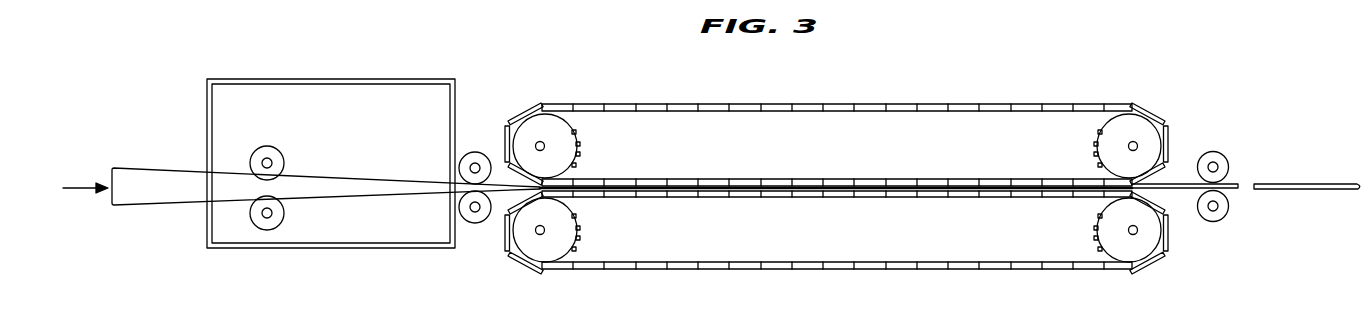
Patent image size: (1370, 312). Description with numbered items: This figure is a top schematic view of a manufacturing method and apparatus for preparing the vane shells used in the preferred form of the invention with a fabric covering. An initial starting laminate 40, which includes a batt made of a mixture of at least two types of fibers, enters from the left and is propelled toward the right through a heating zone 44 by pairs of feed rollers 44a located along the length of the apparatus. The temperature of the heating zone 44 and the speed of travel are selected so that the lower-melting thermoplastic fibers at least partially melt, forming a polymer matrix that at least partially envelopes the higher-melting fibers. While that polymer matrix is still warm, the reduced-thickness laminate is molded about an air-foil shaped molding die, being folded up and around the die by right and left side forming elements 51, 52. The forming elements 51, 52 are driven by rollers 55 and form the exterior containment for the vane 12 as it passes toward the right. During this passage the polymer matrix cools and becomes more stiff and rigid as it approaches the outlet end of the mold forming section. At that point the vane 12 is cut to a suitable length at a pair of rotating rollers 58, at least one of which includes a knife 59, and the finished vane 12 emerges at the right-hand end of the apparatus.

The initial starting laminate 40 is at (146, 167).
The heating zone 44 is at (341, 70).
The feed rollers 44a is at (265, 145).
The left side forming element 52 is at (856, 112).
The right side forming element 51 is at (812, 197).
The rollers 55 is at (580, 146).
The rotating rollers 58 is at (1210, 151).
The knife 59 is at (1226, 167).
The vane 12 is at (1320, 173).